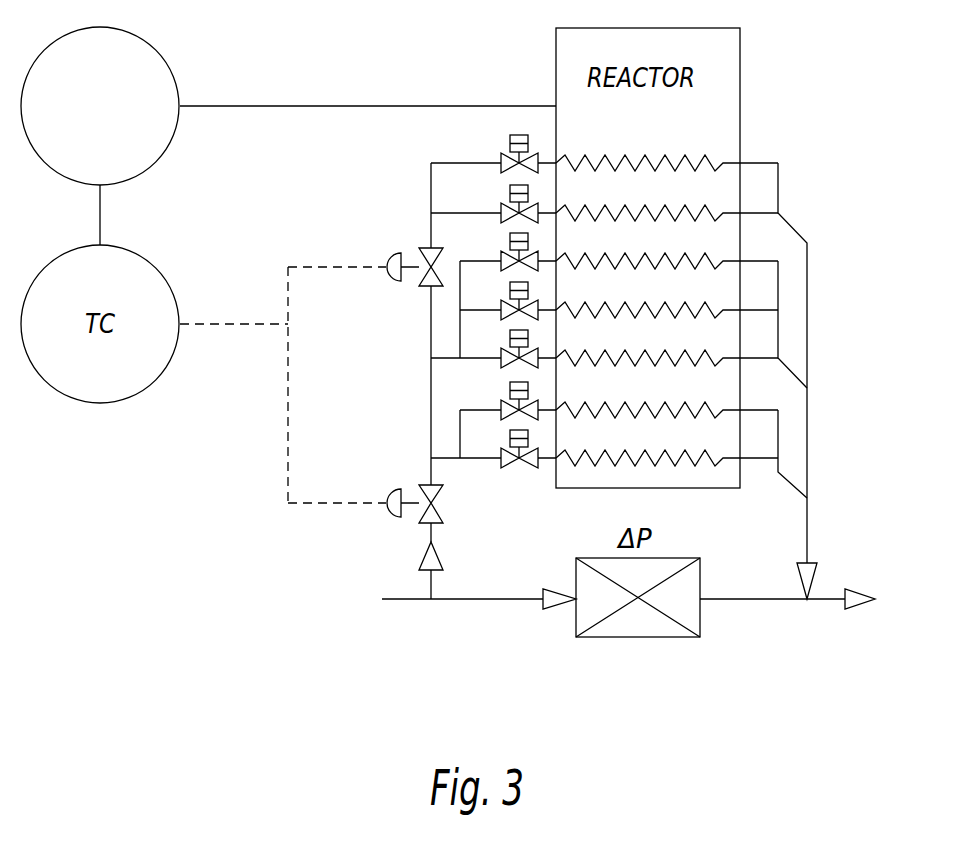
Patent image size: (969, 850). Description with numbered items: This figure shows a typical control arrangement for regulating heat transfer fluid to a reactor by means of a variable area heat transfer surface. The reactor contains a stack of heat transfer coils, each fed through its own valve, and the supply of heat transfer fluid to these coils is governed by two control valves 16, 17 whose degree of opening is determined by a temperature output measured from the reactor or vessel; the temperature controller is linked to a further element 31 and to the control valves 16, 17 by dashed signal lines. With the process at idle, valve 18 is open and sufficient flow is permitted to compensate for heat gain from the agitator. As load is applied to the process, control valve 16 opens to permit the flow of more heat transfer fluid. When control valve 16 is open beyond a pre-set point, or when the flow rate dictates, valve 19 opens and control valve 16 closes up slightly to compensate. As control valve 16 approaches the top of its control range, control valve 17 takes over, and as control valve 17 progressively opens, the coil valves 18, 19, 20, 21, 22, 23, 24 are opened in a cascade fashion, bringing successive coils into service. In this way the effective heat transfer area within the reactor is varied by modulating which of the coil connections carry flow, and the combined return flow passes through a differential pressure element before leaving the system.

The controller 31 is at (288, 136).
The control valve 16 is at (391, 256).
The control valve 17 is at (392, 514).
The valve 18 is at (511, 151).
The valve 19 is at (511, 201).
The valve 20 is at (514, 252).
The valve 21 is at (514, 301).
The valve 22 is at (514, 349).
The valve 23 is at (514, 401).
The valve 24 is at (514, 449).